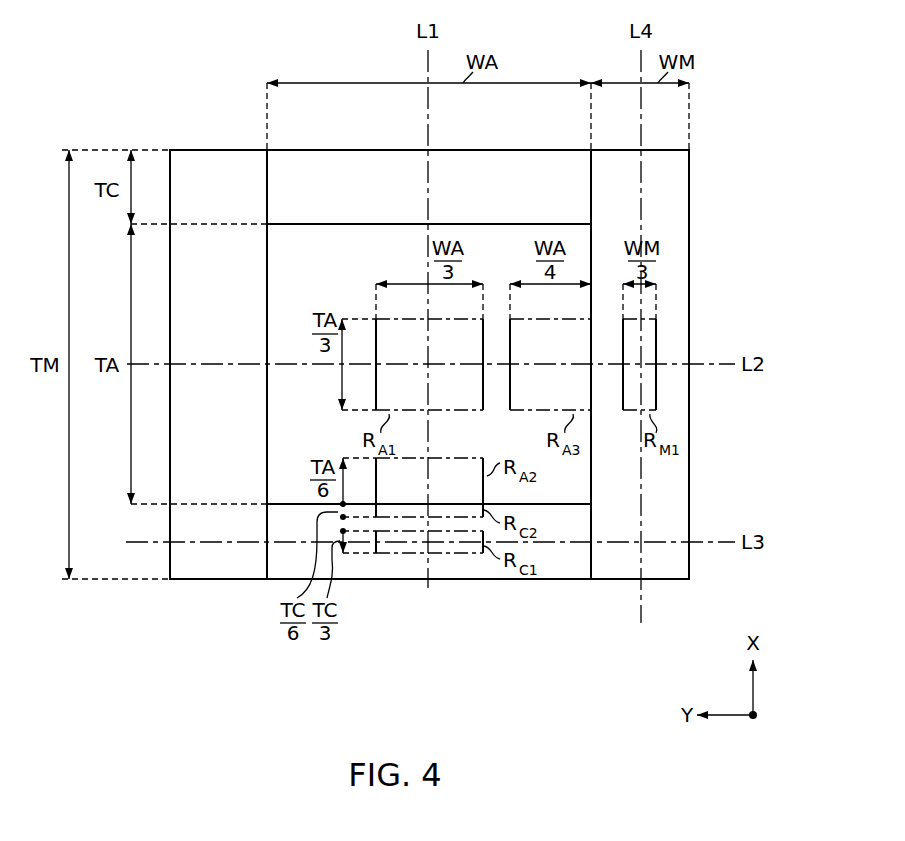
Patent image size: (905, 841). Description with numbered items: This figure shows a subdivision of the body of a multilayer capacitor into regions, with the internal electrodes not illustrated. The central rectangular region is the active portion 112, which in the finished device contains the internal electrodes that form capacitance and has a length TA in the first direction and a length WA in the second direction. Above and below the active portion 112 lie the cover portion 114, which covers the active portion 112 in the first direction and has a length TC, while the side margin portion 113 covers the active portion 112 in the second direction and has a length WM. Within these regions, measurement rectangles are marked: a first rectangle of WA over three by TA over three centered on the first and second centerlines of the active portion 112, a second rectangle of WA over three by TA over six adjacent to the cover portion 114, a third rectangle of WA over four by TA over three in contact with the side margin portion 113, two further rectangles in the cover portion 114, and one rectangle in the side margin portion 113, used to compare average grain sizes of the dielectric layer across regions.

The active portion 112 is at (314, 240).
The side margin portion 113 is at (663, 221).
The cover portion 114 is at (498, 166).